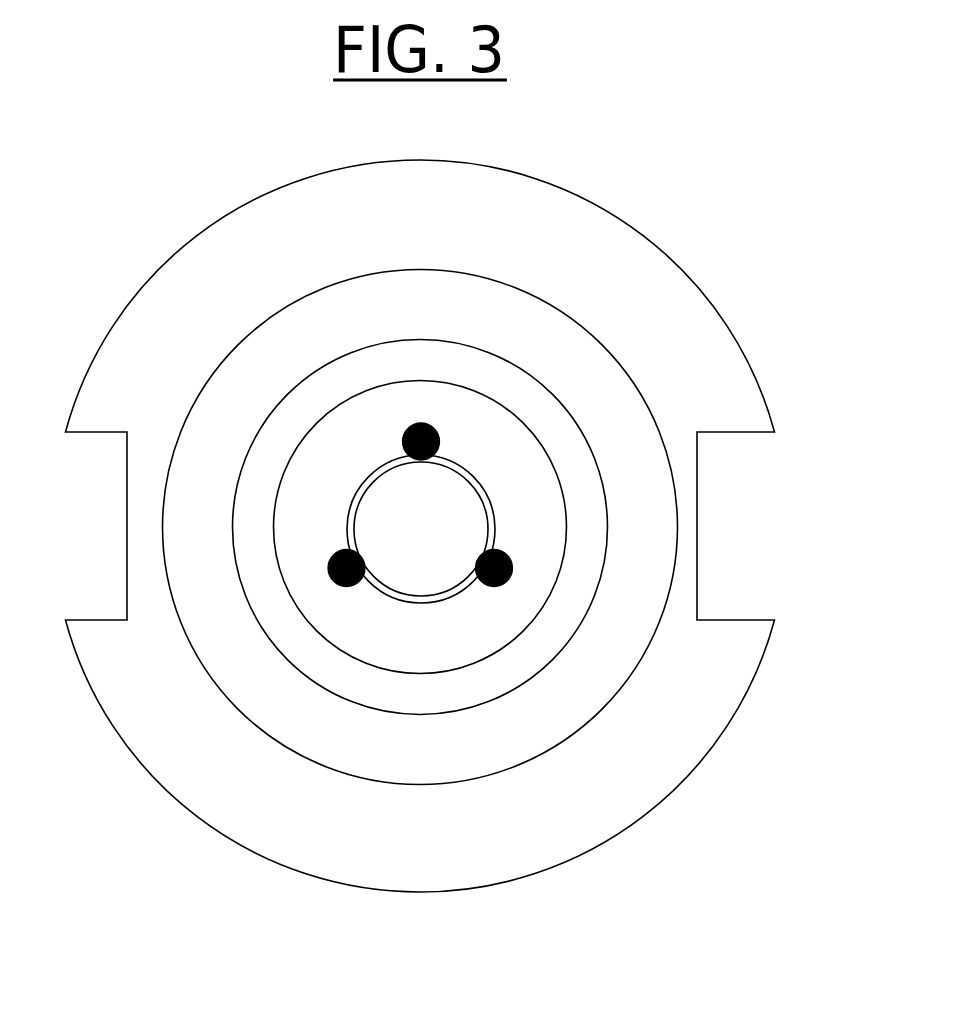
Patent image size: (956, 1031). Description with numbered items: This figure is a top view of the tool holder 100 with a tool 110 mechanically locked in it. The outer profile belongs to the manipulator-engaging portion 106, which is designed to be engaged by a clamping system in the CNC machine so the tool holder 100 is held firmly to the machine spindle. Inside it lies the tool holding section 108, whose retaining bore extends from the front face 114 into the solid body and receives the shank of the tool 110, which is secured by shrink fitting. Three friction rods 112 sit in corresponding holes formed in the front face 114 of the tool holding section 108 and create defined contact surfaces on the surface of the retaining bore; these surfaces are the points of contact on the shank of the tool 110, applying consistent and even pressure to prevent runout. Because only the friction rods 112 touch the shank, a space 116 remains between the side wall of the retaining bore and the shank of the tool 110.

The tool holder 100 is at (690, 780).
The manipulator-engaging portion 106 is at (662, 248).
The tool holding section 108 is at (585, 527).
The tool 110 is at (420, 527).
The friction rod 112 is at (275, 580).
The front face 114 is at (347, 452).
The space 116 is at (331, 557).